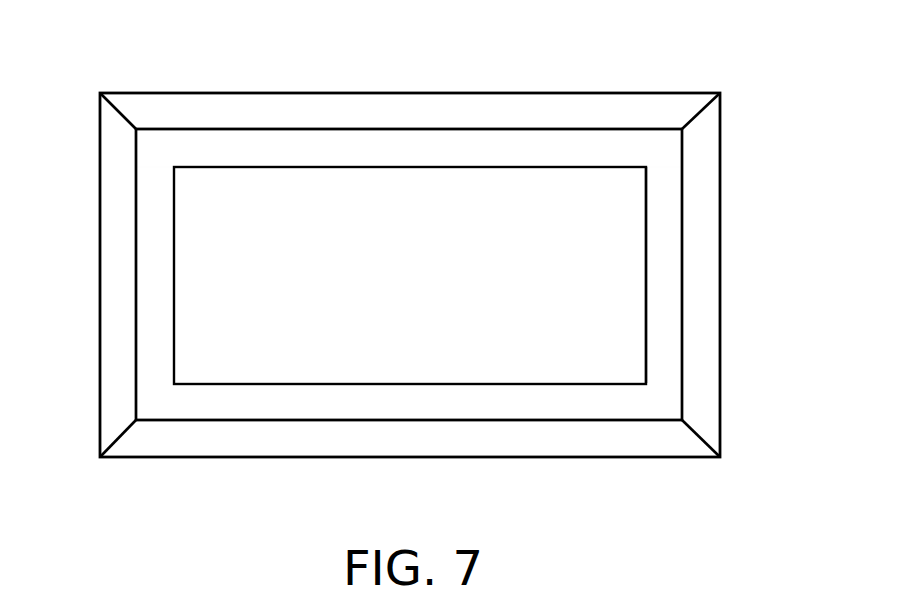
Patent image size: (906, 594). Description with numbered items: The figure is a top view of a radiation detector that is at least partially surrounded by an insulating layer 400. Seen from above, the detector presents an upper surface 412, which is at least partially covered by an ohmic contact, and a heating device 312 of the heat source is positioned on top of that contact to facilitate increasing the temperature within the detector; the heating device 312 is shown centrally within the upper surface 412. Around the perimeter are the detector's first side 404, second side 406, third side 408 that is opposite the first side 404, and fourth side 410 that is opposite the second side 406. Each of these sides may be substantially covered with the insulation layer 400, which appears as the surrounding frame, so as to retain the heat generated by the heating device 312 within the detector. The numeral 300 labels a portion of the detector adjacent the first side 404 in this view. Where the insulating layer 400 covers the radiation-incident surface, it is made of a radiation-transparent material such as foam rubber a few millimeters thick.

The substrate 300 is at (666, 214).
The heating device 312 is at (443, 293).
The insulating layer 400 is at (488, 110).
The first side 404 is at (683, 275).
The second side 406 is at (247, 421).
The third side 408 is at (135, 322).
The fourth side 410 is at (380, 130).
The upper surface 412 is at (600, 147).